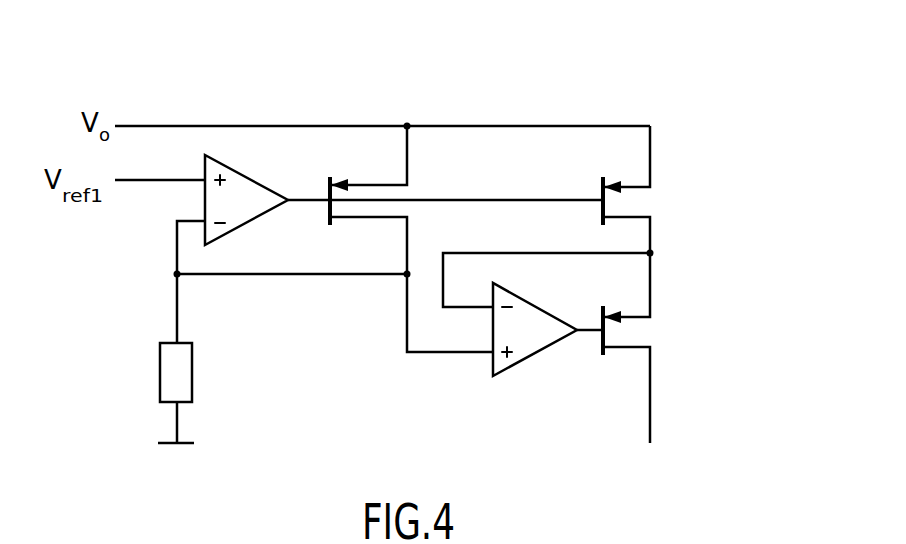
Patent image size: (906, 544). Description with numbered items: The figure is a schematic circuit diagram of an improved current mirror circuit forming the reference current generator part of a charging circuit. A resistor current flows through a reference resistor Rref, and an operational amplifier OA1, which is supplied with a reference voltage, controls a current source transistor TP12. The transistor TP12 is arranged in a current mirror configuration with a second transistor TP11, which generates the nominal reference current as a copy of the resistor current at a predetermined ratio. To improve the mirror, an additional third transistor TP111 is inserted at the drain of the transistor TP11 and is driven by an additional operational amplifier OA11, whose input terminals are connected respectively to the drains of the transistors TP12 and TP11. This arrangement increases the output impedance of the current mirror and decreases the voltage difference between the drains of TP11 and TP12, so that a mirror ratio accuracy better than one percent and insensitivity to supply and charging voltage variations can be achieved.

The operational amplifier OA1 is at (235, 152).
The current source transistor TP12 is at (370, 152).
The additional operational amplifier OA11 is at (547, 278).
The second transistor TP11 is at (628, 155).
The third transistor TP111 is at (646, 286).
The reference resistor Rref is at (147, 372).